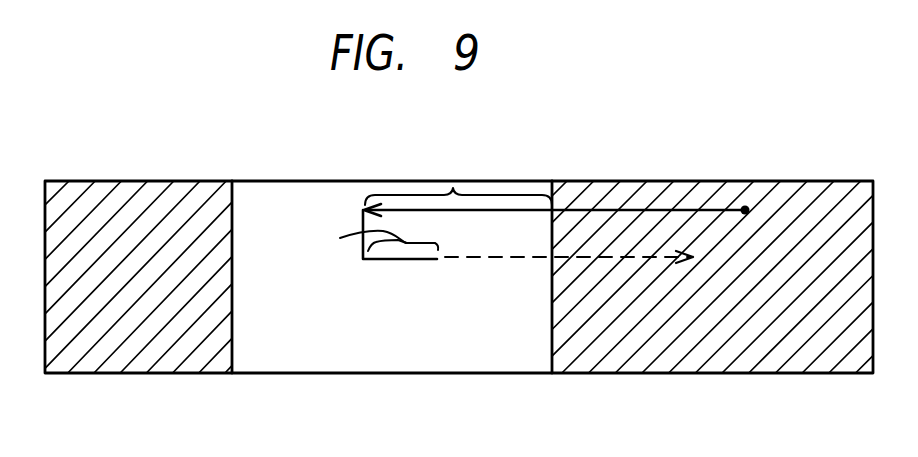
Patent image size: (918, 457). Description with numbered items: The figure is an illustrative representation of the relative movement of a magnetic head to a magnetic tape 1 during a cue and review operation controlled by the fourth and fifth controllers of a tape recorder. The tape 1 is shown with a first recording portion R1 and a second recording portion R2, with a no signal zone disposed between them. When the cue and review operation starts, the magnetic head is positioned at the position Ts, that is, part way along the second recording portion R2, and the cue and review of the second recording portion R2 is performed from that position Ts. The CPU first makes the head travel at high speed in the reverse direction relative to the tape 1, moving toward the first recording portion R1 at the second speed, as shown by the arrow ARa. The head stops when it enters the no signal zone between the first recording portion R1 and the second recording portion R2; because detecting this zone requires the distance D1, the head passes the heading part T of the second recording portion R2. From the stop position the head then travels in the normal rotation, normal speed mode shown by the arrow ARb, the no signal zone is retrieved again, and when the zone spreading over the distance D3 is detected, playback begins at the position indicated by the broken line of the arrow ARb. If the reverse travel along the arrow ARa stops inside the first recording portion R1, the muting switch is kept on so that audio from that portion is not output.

The magnetic tape 1 is at (542, 181).
The first recording portion R1 is at (183, 373).
The second recording portion R2 is at (740, 373).
The heading part of the second recording portion T is at (552, 346).
The position Ts TS is at (745, 208).
The distance D1 is at (453, 188).
The distance D3 is at (340, 238).
The arrow ARa is at (668, 210).
The arrow ARb is at (413, 260).